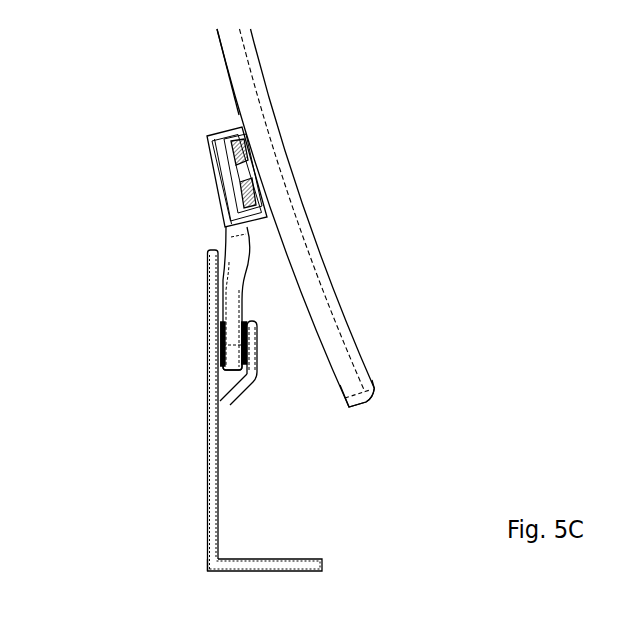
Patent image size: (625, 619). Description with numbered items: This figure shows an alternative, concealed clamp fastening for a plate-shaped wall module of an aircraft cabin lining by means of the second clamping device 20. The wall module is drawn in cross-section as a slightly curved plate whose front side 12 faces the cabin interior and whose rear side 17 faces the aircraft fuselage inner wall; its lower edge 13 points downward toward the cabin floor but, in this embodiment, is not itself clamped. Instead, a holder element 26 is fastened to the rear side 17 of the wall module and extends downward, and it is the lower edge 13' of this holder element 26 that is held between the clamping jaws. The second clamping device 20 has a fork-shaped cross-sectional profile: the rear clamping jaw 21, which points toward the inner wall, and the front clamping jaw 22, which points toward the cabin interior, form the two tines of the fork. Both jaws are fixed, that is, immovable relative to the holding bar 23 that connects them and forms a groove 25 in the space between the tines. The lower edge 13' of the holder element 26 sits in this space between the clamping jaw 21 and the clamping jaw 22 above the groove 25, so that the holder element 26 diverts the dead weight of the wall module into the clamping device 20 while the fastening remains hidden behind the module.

The front side 12 is at (281, 54).
The lower edge 13 is at (396, 384).
The lower edge 13' is at (172, 386).
The rear side 17 is at (199, 54).
The second clamping device 20 is at (146, 287).
The clamping jaw 21 is at (214, 310).
The clamping jaw 22 is at (253, 349).
The holding bar 23 is at (197, 548).
The groove 25 is at (229, 380).
The holder element 26 is at (196, 176).